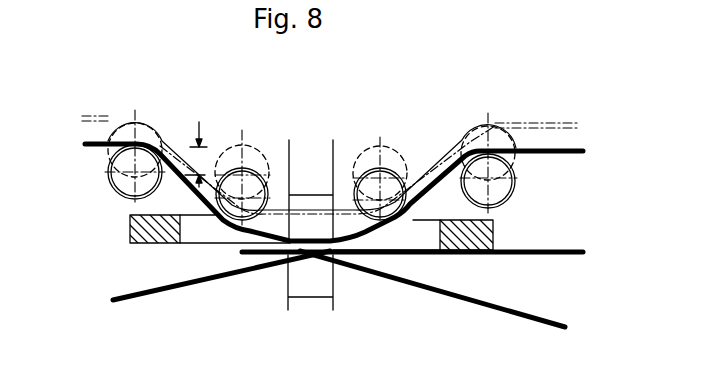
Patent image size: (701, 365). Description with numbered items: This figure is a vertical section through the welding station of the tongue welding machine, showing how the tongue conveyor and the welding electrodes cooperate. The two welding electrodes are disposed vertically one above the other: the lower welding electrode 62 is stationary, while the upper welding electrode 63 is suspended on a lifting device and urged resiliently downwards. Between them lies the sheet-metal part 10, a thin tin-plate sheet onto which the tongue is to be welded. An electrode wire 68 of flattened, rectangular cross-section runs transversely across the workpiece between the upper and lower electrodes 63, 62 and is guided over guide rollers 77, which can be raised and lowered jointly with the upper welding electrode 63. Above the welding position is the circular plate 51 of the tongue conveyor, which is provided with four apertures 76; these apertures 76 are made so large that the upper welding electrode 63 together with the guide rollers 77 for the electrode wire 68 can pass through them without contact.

The sheet-metal part 10 is at (555, 250).
The plate 51 is at (130, 225).
The lower welding electrode 62 is at (312, 282).
The upper welding electrode 63 is at (310, 158).
The electrode wire 68 is at (98, 147).
The aperture 76 is at (193, 235).
The guide rollers 77 is at (230, 148).